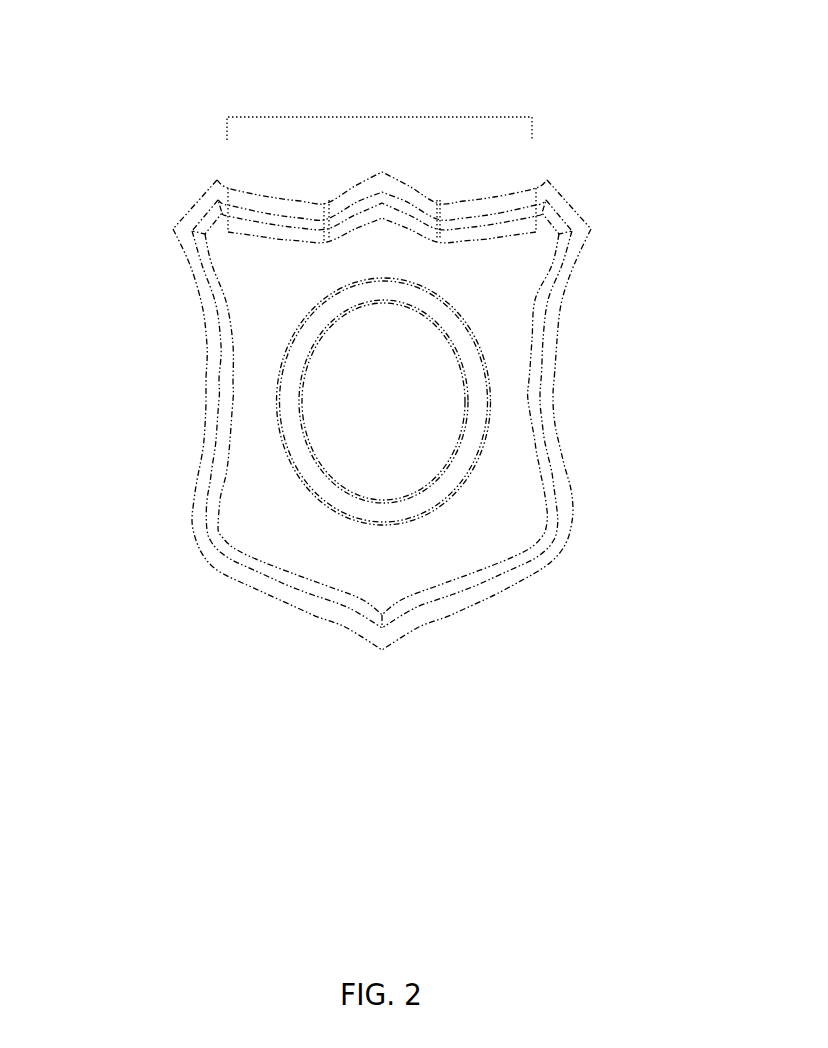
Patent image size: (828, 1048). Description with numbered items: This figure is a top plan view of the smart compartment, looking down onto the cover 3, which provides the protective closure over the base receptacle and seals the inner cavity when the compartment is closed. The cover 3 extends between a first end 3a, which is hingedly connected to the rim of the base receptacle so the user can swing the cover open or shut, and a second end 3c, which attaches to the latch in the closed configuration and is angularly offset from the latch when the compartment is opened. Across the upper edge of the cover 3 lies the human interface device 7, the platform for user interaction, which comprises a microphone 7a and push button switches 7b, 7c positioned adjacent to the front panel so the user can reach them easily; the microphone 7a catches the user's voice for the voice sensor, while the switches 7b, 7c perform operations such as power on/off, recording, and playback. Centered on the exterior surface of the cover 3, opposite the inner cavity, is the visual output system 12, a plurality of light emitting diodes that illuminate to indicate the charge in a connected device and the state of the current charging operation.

The cover 3 is at (527, 495).
The first end of the cover 3a is at (202, 446).
The second end of the cover 3c is at (557, 423).
The human interface device 7 is at (385, 115).
The microphone 7a is at (283, 207).
The push button switch 7b is at (400, 193).
The push button switch 7c is at (465, 210).
The visual output system 12 is at (450, 330).